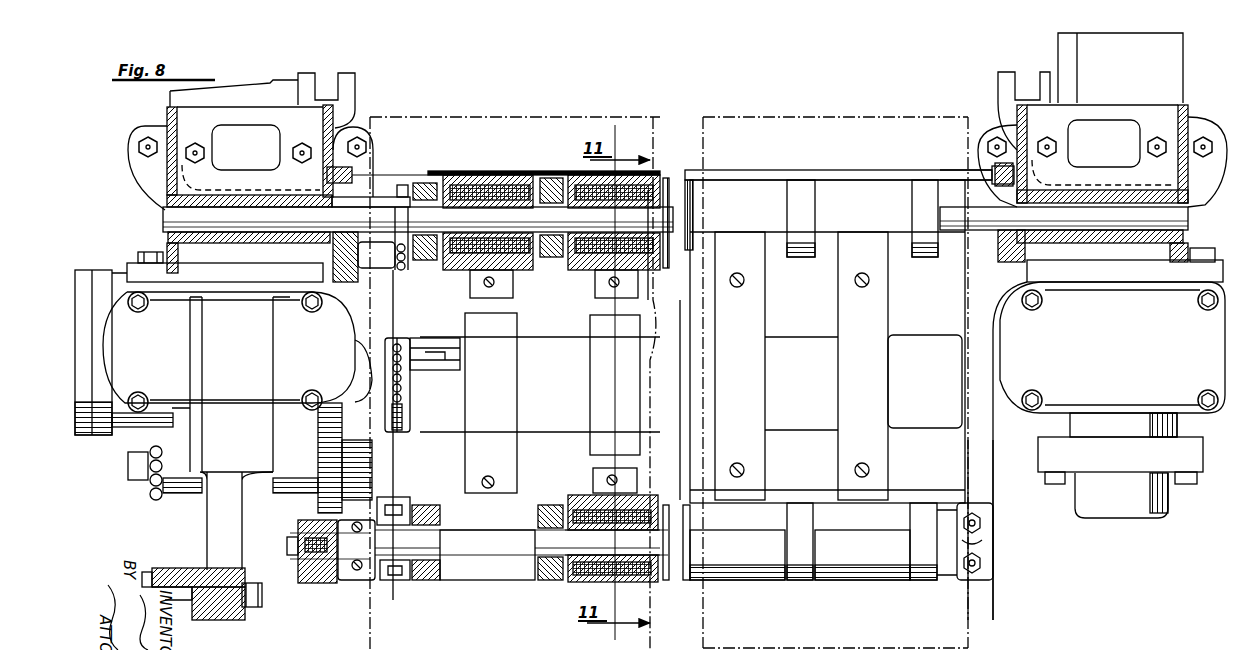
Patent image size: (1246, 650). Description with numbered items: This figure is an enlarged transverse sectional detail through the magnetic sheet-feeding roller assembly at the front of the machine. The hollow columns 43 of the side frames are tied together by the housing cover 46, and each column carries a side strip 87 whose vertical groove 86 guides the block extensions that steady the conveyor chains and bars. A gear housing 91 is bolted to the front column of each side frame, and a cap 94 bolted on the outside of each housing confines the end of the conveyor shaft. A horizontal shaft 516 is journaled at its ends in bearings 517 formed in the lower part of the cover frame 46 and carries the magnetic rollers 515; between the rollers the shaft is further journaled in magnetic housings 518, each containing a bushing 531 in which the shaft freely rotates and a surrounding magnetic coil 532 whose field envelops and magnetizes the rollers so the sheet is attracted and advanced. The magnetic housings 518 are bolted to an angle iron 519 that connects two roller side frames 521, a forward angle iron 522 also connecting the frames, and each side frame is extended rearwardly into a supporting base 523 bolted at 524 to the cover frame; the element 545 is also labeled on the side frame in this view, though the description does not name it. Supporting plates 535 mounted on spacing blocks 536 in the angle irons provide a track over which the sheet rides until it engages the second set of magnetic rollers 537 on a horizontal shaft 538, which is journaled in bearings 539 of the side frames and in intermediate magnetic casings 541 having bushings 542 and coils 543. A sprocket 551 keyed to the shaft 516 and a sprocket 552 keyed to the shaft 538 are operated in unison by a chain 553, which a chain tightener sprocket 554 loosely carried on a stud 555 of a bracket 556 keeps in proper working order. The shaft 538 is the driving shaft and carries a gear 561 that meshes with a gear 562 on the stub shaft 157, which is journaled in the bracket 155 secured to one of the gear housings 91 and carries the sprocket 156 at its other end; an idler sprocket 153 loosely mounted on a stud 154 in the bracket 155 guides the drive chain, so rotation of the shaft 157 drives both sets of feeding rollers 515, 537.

The hollow column 43 is at (676, 70).
The housing cover 46 is at (1112, 96).
The vertical groove 86 is at (336, 80).
The side strip 87 is at (348, 90).
The gear housing 91 is at (650, 436).
The cap 94 is at (258, 510).
The idler sprocket 153 is at (185, 554).
The stud 154 is at (228, 605).
The bracket 155 is at (236, 560).
The sprocket 156 is at (160, 500).
The shaft 157 is at (372, 466).
The magnetic roller 515 is at (802, 195).
The horizontal shaft 516 is at (1112, 220).
The bearing 517 is at (282, 198).
The magnetic housing 518 is at (498, 178).
The angle iron 519 is at (827, 341).
The roller side frame 521 is at (367, 382).
The forward angle iron 522 is at (823, 515).
The supporting base 523 is at (985, 198).
The bolt 524 is at (995, 175).
The bushing 531 is at (512, 207).
The magnetic coil 532 is at (460, 187).
The supporting plate 535 is at (632, 372).
The spacing block 536 is at (612, 290).
The magnetic roller 537 is at (422, 583).
The horizontal shaft 538 is at (428, 583).
The bearing 539 is at (358, 590).
The magnetic casing 541 is at (517, 555).
The bushing 542 is at (650, 548).
The magnetic coil 543 is at (576, 570).
The side plate 545 is at (993, 490).
The sprocket 551 is at (403, 185).
The sprocket 552 is at (398, 582).
The chain 553 is at (404, 424).
The chain tightener sprocket 554 is at (404, 392).
The stud 555 is at (385, 352).
The bracket 556 is at (447, 351).
The gear 561 is at (322, 585).
The gear 562 is at (318, 425).